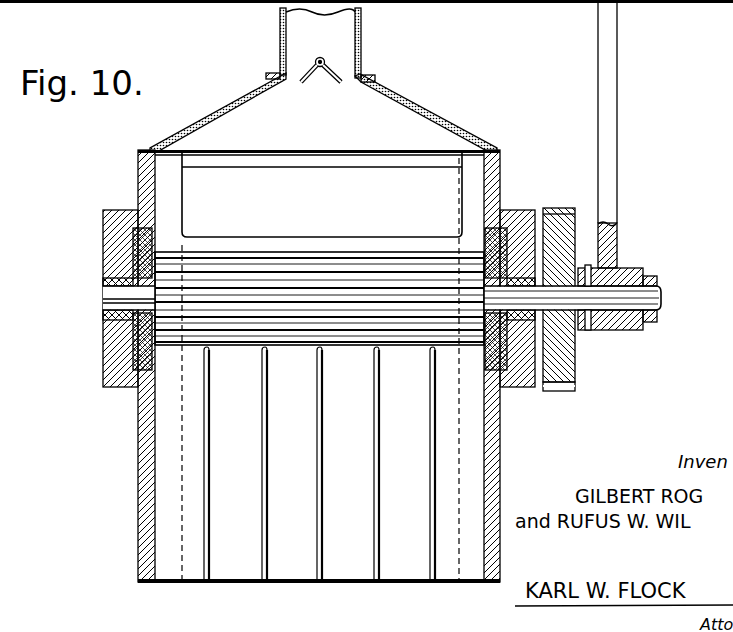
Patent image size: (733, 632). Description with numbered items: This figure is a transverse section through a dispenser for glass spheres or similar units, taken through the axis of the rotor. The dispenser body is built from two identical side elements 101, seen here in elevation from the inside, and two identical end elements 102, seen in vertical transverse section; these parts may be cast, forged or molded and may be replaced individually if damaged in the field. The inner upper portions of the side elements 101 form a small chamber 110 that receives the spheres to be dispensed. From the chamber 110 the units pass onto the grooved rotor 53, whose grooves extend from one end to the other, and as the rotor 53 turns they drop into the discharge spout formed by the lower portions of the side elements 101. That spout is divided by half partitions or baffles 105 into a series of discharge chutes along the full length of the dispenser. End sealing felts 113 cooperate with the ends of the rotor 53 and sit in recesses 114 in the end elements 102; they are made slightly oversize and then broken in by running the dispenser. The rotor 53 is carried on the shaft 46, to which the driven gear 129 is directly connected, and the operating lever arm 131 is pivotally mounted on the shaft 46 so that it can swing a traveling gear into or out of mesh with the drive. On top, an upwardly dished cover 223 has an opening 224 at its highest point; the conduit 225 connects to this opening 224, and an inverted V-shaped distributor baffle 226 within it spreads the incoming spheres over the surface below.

The shaft 46 is at (654, 297).
The rotor 53 is at (298, 322).
The side element 101 is at (224, 505).
The end element 102 is at (140, 443).
The half partition or baffle 105 is at (316, 548).
The chamber 110 is at (322, 195).
The end sealing felt 113 is at (140, 338).
The recess 114 is at (130, 255).
The driven gear 129 is at (561, 370).
The operating lever arm 131 is at (619, 110).
The upwardly dished cover 223 is at (425, 112).
The opening 224 is at (362, 77).
The conduit 225 is at (348, 23).
The inverted V-shaped distributor baffle 226 is at (335, 52).